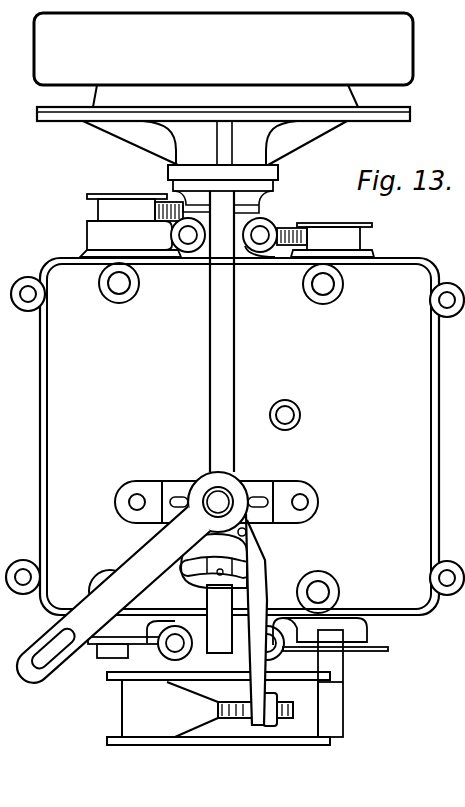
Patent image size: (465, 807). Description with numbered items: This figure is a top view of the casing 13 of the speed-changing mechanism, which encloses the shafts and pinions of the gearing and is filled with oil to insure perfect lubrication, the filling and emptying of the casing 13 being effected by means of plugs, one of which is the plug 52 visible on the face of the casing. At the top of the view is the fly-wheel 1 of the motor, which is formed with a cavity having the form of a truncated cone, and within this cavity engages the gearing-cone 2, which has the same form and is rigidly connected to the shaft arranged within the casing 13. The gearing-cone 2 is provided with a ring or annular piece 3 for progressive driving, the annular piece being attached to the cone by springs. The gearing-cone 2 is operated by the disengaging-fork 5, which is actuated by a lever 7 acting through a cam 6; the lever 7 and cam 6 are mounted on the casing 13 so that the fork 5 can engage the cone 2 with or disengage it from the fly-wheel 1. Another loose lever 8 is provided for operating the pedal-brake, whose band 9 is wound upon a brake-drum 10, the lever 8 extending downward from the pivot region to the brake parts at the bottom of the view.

The fly-wheel 1 is at (223, 49).
The gearing-cone 2 is at (215, 143).
The ring or annular piece 3 is at (233, 106).
The disengaging-fork 5 is at (223, 409).
The cam 6 is at (216, 530).
The lever 7 is at (113, 594).
The loose lever 8 is at (256, 619).
The band 9 is at (218, 708).
The brake-drum 10 is at (268, 709).
The casing 13 is at (235, 436).
The plug 52 is at (299, 420).